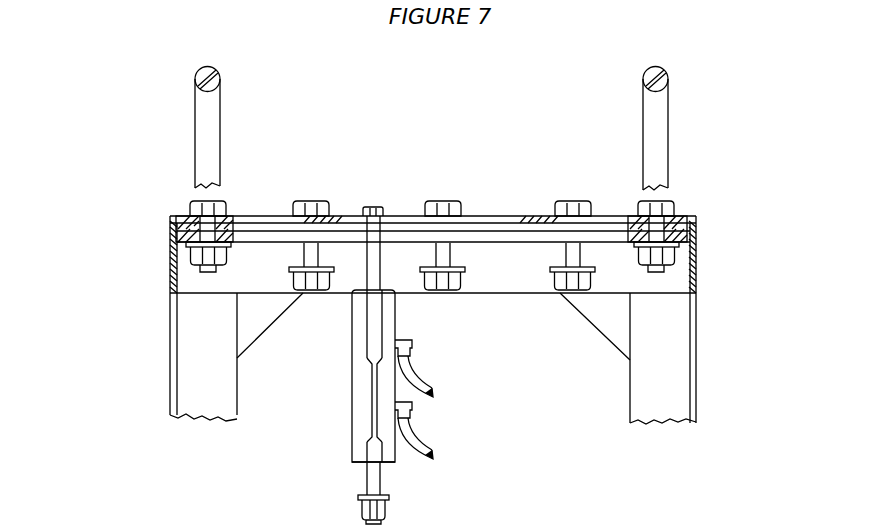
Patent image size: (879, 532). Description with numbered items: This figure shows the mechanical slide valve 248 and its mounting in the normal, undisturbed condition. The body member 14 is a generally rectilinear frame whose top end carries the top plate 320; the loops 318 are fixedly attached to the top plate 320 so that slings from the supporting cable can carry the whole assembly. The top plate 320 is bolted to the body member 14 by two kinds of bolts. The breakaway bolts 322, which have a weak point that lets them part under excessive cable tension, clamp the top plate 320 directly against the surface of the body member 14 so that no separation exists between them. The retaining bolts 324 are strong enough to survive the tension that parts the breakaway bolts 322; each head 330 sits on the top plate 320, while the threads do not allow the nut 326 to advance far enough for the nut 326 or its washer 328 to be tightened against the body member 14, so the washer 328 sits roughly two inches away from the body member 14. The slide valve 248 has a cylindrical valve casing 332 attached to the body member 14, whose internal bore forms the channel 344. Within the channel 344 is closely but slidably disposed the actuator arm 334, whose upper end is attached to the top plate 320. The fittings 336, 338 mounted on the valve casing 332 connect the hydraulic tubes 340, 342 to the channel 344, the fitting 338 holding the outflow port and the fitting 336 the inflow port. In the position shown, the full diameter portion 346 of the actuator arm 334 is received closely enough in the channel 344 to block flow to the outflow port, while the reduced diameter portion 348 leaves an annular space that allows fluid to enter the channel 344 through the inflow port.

The body member 14 is at (697, 273).
The mechanical slide valve 248 is at (369, 365).
The loops 318 is at (213, 70).
The top plate 320 is at (697, 226).
The breakaway bolts 322 is at (195, 207).
The retaining bolts 324 is at (307, 200).
The nut 326 is at (300, 280).
The washer 328 is at (292, 268).
The head of retaining bolt 330 is at (323, 198).
The valve casing 332 is at (352, 458).
The actuator arm 334 is at (382, 482).
The fitting 336 is at (413, 410).
The fitting 338 is at (413, 346).
The hydraulic tube 340 is at (416, 443).
The hydraulic tube 342 is at (416, 380).
The channel 344 is at (357, 303).
The full diameter portion 346 is at (370, 328).
The reduced diameter portion 348 is at (372, 377).